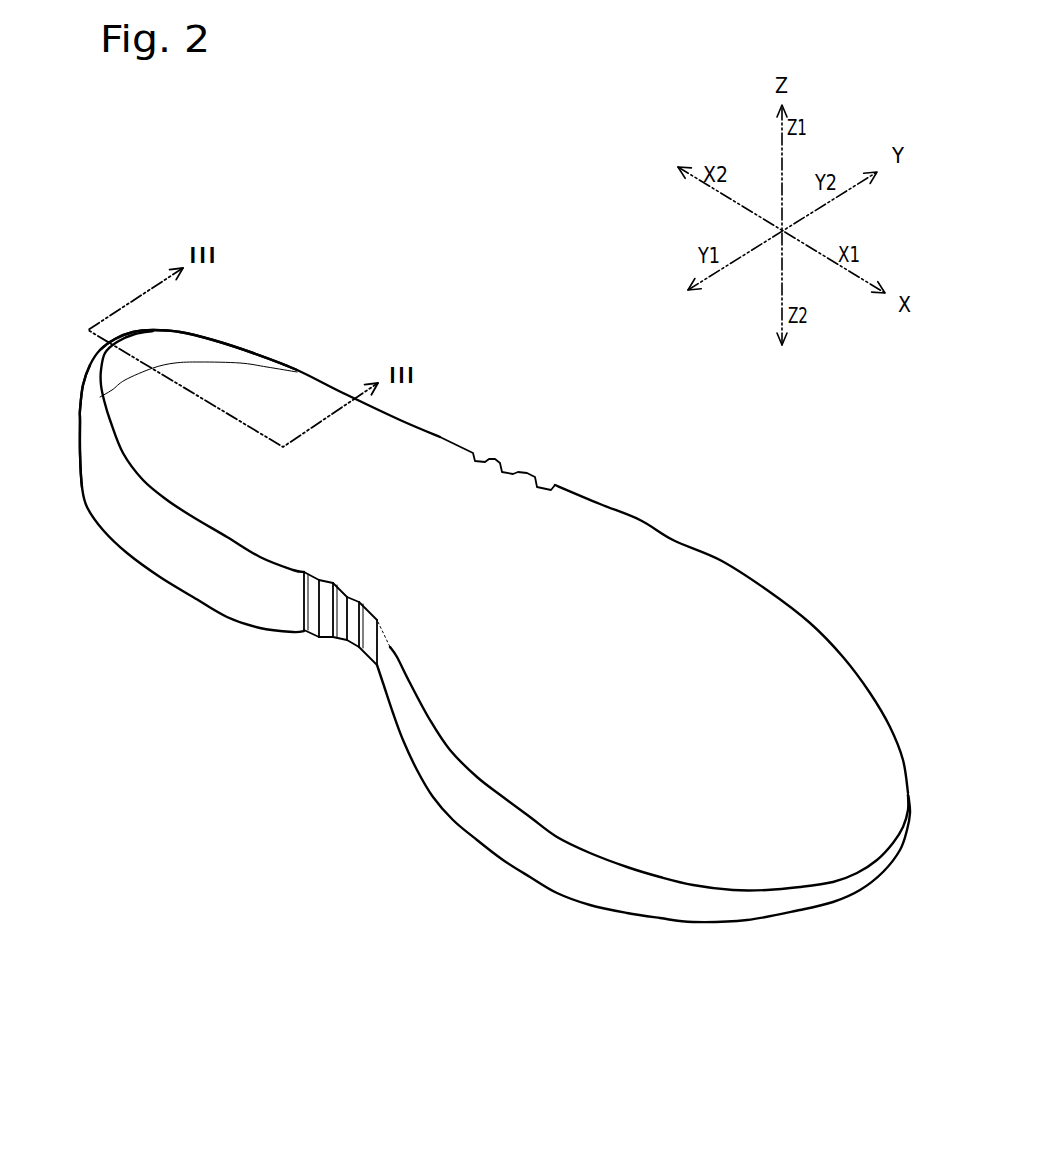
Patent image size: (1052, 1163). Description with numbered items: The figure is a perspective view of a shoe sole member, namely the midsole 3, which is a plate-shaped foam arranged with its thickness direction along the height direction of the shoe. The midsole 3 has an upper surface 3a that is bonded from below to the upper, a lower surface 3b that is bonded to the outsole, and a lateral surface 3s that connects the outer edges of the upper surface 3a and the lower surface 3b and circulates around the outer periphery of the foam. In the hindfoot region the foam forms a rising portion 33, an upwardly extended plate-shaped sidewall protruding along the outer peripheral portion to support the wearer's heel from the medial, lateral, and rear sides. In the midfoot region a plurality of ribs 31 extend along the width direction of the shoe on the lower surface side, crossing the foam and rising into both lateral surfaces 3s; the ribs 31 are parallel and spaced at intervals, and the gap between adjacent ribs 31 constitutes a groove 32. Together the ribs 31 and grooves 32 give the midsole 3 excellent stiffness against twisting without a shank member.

The midsole 3 is at (474, 282).
The upper surface 3a is at (593, 615).
The lower surface 3b is at (528, 896).
The lateral surface 3s is at (258, 590).
The rib 31 is at (498, 463).
The groove 32 is at (543, 485).
The rising portion 33 is at (100, 397).